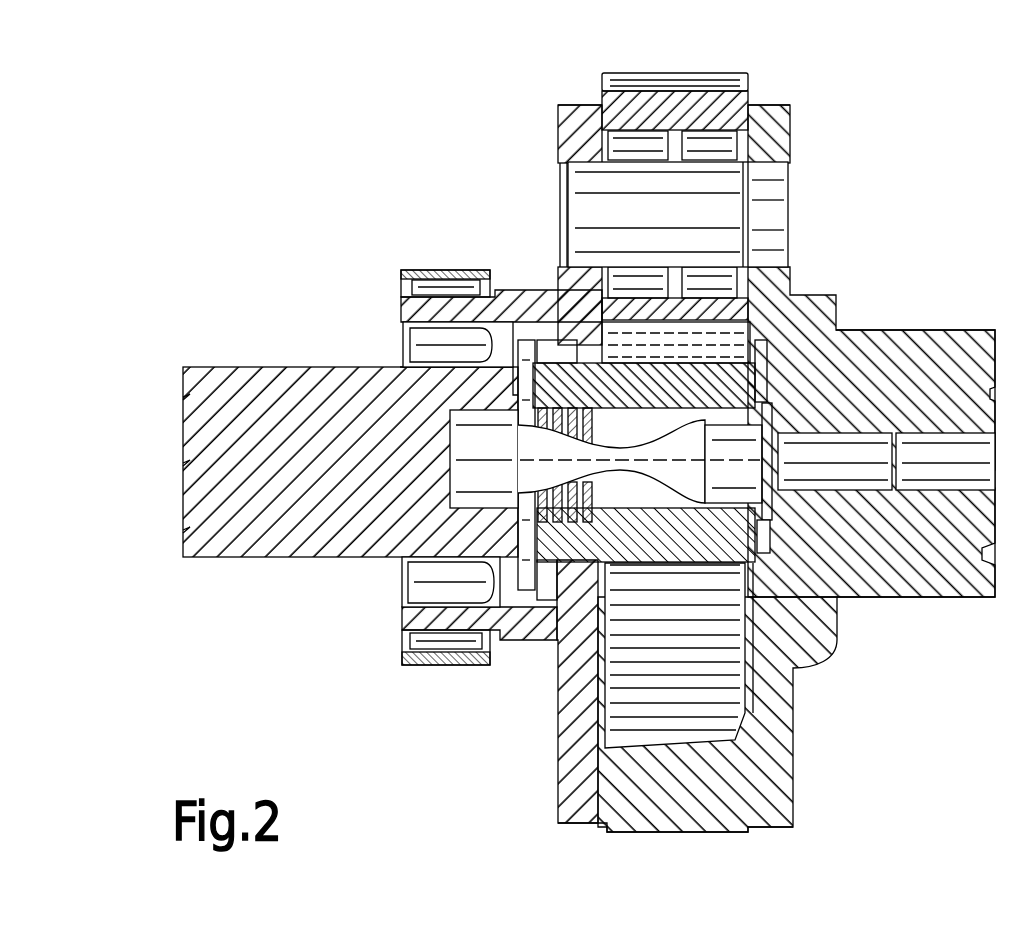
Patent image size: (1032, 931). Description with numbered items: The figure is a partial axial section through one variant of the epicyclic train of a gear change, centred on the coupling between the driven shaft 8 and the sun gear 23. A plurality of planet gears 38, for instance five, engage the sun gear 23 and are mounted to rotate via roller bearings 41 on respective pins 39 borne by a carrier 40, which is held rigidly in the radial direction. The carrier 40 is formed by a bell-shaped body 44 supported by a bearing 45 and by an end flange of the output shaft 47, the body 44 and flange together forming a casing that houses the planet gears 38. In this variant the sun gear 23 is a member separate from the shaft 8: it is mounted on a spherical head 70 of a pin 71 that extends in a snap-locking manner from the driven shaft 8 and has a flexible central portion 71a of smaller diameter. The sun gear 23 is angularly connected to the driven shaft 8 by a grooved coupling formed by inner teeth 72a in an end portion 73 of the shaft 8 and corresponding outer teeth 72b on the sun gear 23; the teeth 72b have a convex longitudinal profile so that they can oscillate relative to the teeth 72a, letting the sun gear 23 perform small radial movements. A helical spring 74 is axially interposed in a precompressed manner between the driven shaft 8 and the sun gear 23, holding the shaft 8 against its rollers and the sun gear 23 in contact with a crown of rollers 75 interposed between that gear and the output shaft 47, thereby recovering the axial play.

The driven shaft 8 is at (251, 395).
The helical spring 74 is at (513, 395).
The bearing 45 is at (438, 292).
The bell-shaped body 44 is at (462, 335).
The inner teeth 72a is at (560, 342).
The outer teeth 72b is at (560, 340).
The planet gear 38 is at (680, 113).
The roller bearing 41 is at (716, 143).
The pin 39 is at (770, 213).
The sun gear 23 is at (735, 385).
The spherical head 70 is at (685, 455).
The output shaft 47 is at (955, 375).
The crown of rollers 75 is at (768, 548).
The end portion 73 is at (517, 592).
The flexible central portion 71a is at (560, 596).
The pin 71 is at (598, 632).
The carrier 40 is at (594, 829).